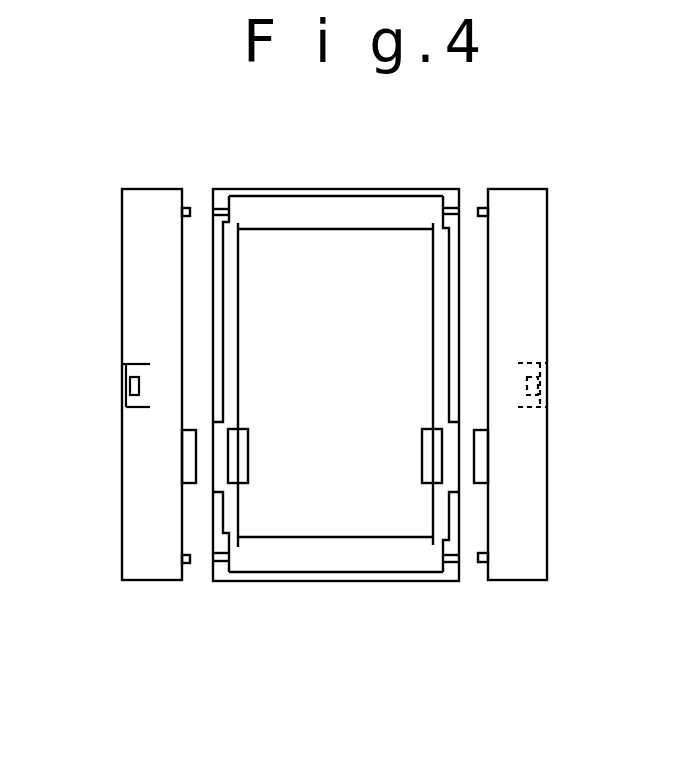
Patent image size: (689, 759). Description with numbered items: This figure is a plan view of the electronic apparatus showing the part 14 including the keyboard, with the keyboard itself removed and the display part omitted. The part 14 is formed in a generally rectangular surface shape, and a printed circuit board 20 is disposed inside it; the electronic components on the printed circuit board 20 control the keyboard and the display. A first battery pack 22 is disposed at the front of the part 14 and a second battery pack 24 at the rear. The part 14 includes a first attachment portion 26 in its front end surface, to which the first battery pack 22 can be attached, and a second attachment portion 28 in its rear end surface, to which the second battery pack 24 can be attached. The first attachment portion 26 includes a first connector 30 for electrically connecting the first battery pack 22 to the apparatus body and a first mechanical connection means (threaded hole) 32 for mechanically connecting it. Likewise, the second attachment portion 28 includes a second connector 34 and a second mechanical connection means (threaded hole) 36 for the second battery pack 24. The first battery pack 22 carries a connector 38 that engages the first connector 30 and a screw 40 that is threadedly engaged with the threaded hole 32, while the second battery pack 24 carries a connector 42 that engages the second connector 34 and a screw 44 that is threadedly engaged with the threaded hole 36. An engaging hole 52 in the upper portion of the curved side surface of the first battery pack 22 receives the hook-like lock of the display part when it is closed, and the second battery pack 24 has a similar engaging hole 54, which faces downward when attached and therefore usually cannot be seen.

The part including the keyboard 14 is at (328, 583).
The printed circuit board 20 is at (362, 508).
The first battery pack 22 is at (152, 568).
The second battery pack 24 is at (517, 568).
The first attachment portion 26 is at (203, 582).
The second attachment portion 28 is at (463, 580).
The first connector 30 is at (237, 460).
The first mechanical connection means (threaded hole) 32 is at (222, 208).
The second connector 34 is at (437, 465).
The second mechanical connection means (threaded hole) 36 is at (450, 208).
The connector 38 is at (187, 452).
The screw 40 is at (187, 207).
The connector 42 is at (482, 450).
The screw 44 is at (481, 208).
The engaging hole 52 is at (125, 383).
The engaging hole 54 is at (548, 385).